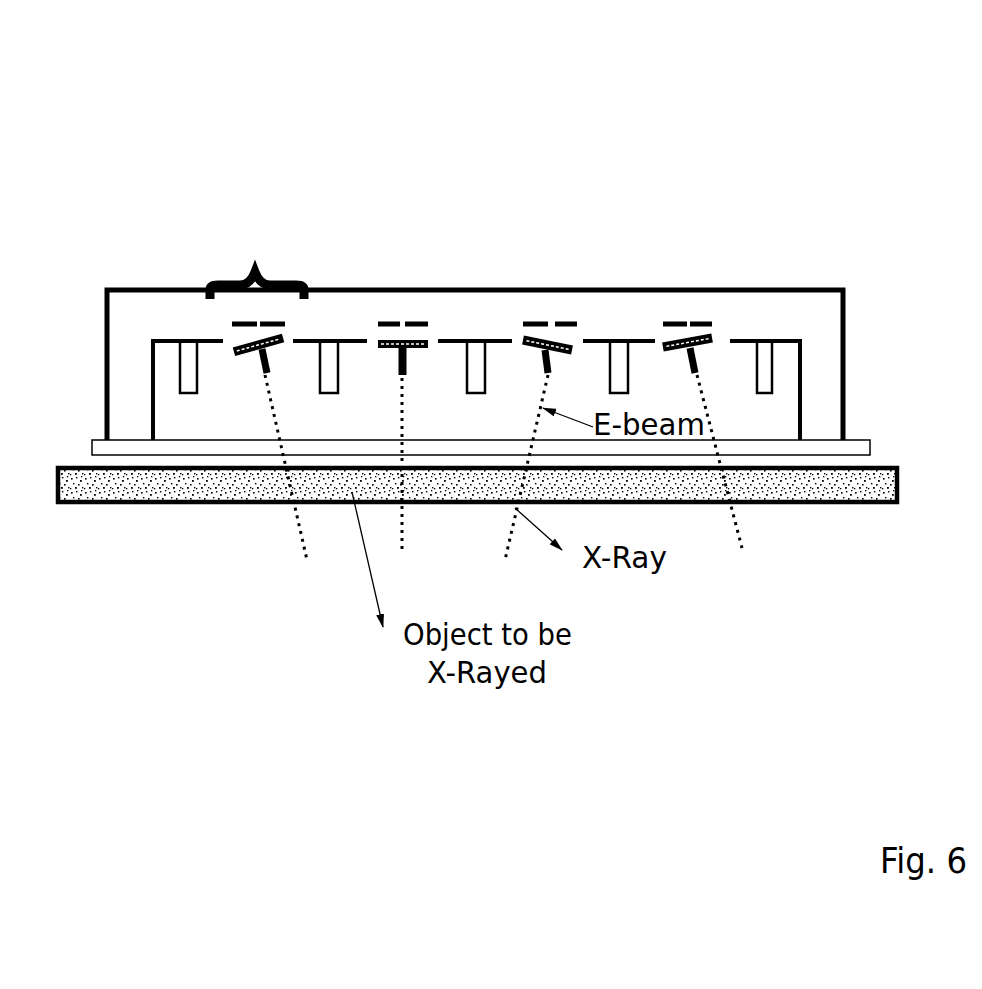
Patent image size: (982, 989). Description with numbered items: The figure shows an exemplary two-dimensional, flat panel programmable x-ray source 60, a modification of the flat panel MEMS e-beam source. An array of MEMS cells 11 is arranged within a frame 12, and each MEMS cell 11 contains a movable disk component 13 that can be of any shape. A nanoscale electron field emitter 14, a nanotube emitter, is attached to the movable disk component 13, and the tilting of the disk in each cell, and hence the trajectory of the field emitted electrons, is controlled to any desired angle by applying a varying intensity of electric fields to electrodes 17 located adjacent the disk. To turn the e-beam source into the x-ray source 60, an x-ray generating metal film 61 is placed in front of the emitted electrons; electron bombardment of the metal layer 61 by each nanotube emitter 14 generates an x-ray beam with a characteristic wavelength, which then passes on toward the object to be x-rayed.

The programmable x-ray source 60 is at (436, 152).
The MEMS cell 11 is at (264, 252).
The frame 12 is at (788, 307).
The movable disk component 13 is at (543, 337).
The nanoscale electron field emitter 14 is at (258, 370).
The electrode 17 is at (423, 313).
The x-ray generating metal film 61 is at (775, 443).